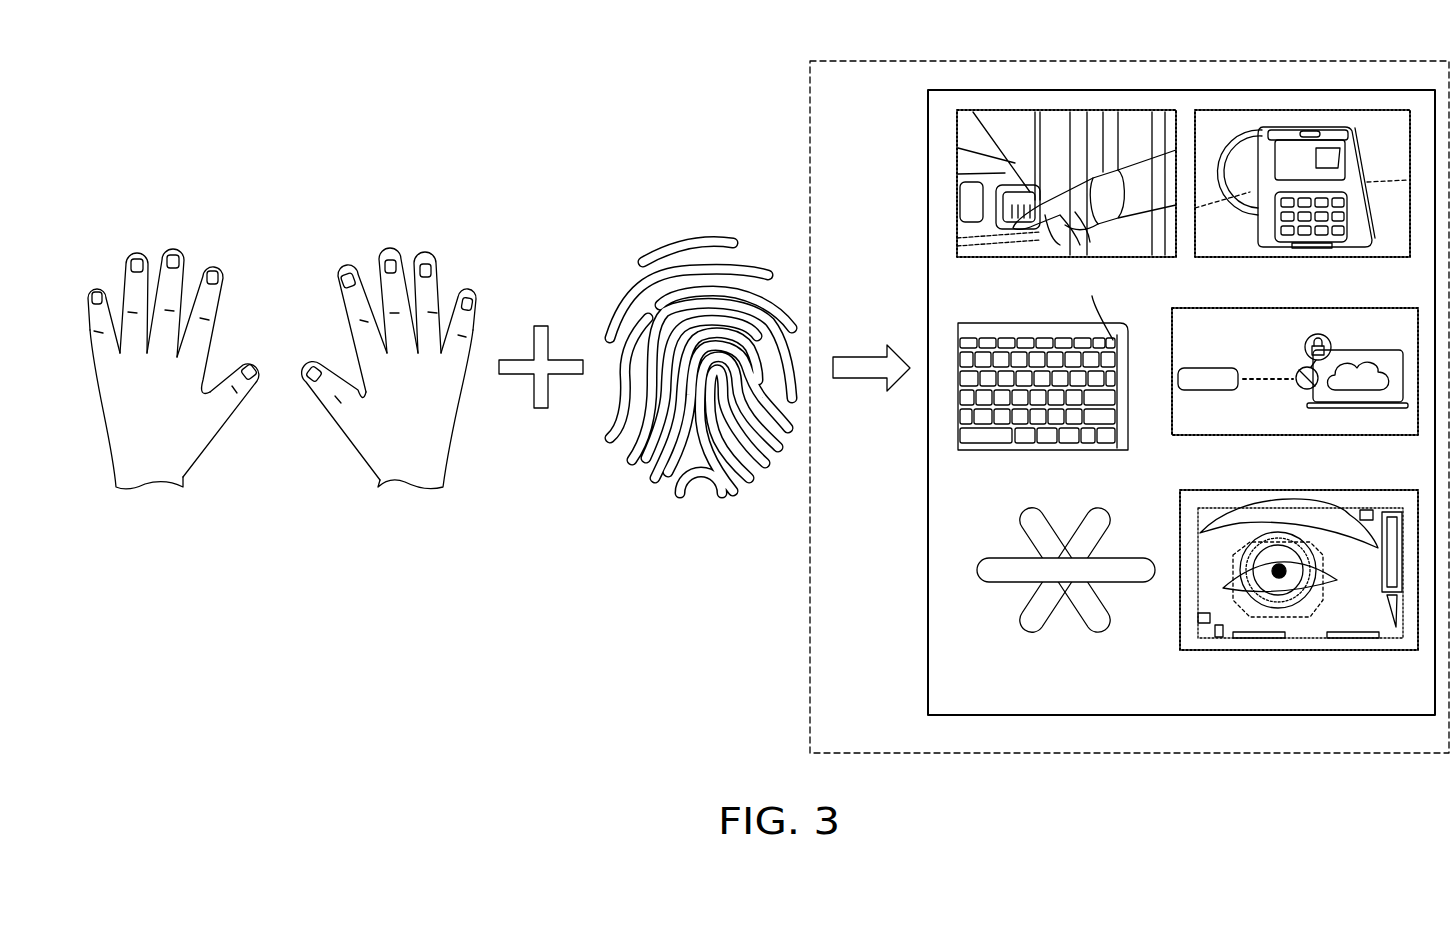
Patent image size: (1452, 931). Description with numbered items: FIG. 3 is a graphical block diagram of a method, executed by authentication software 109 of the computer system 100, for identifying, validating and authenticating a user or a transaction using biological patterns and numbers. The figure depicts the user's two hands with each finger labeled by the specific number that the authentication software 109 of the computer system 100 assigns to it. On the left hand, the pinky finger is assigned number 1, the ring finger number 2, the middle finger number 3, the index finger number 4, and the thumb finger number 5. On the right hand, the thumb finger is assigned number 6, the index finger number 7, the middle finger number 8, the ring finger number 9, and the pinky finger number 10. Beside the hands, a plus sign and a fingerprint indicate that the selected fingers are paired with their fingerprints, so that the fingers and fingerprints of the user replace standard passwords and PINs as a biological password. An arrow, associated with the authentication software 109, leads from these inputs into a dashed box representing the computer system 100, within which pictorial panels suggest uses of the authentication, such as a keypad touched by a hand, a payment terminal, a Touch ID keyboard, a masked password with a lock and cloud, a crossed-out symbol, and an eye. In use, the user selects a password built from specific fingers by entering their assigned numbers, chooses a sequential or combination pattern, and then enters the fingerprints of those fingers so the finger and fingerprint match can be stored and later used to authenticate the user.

The pinky finger of left hand 1 is at (101, 305).
The ring finger of left hand 2 is at (134, 289).
The middle finger of left hand 3 is at (165, 289).
The index finger of left hand 4 is at (200, 315).
The thumb finger of left hand 5 is at (221, 405).
The thumb finger of right hand 6 is at (341, 406).
The index finger of right hand 7 is at (360, 313).
The middle finger of right hand 8 is at (398, 286).
The ring finger of right hand 9 is at (427, 289).
The pinky finger of right hand 10 is at (463, 307).
The computer system 100 is at (810, 642).
The authentication software 109 is at (867, 379).